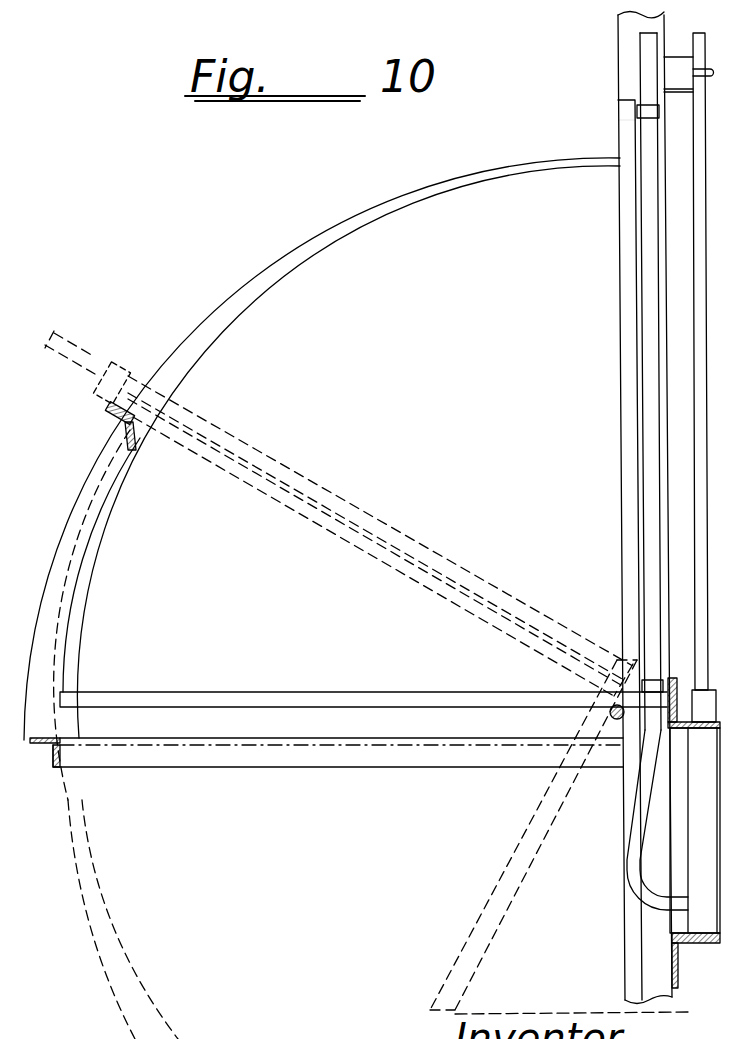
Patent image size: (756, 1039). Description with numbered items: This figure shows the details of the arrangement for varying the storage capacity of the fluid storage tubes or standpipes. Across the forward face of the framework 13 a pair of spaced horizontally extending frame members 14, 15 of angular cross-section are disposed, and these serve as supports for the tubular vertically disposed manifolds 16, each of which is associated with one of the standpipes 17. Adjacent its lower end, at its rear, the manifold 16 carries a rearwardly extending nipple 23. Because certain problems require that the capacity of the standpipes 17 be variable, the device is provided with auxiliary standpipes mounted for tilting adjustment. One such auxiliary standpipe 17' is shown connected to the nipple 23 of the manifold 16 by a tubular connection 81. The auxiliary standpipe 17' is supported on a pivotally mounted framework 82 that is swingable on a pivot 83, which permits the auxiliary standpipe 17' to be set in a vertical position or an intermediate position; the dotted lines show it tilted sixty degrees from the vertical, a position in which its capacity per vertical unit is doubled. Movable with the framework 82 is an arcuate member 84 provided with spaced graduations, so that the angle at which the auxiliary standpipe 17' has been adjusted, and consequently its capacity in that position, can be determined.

The framework 13 is at (628, 943).
The frame member 14 is at (677, 688).
The frame member 15 is at (678, 952).
The manifold 16 is at (697, 840).
The standpipe 17 is at (718, 377).
The auxiliary standpipe 17' is at (609, 381).
The rearwardly extending nipple 23 is at (688, 899).
The tubular connection 81 is at (640, 810).
The pivotally mounted framework 82 is at (628, 405).
The pivot 83 is at (608, 712).
The arcuate member 84 is at (345, 222).